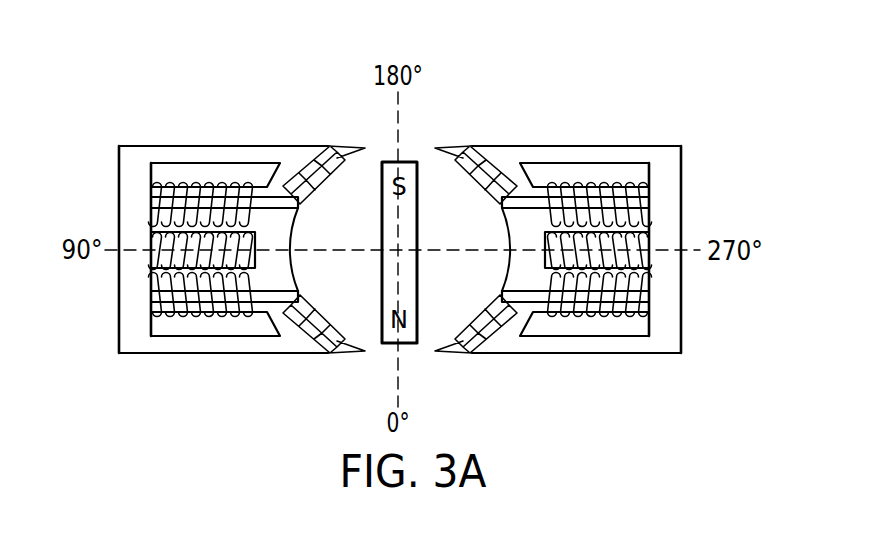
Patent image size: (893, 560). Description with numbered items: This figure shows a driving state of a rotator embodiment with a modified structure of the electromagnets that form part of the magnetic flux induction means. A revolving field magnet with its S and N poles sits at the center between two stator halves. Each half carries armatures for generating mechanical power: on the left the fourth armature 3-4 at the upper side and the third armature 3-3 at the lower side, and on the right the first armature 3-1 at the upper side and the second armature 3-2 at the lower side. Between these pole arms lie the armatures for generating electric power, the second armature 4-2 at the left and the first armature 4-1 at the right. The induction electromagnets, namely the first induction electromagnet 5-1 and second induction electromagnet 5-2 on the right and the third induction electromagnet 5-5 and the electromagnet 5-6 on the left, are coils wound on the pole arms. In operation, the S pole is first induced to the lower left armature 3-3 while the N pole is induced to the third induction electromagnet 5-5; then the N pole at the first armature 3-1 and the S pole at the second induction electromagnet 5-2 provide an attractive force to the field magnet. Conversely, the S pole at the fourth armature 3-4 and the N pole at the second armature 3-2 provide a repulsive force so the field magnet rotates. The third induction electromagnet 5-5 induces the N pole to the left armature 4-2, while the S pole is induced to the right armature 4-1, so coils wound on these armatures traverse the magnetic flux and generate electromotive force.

The first armature 3-1 is at (503, 160).
The second armature 3-2 is at (498, 342).
The third armature 3-3 is at (292, 340).
The fourth armature 3-4 is at (293, 162).
The first armature for generating electric power 4-1 is at (643, 247).
The second armature for generating electric power 4-2 is at (150, 242).
The first induction electromagnet 5-1 is at (647, 190).
The second induction electromagnet 5-2 is at (648, 312).
The third induction electromagnet 5-5 is at (182, 312).
The coil 5-6 is at (182, 192).